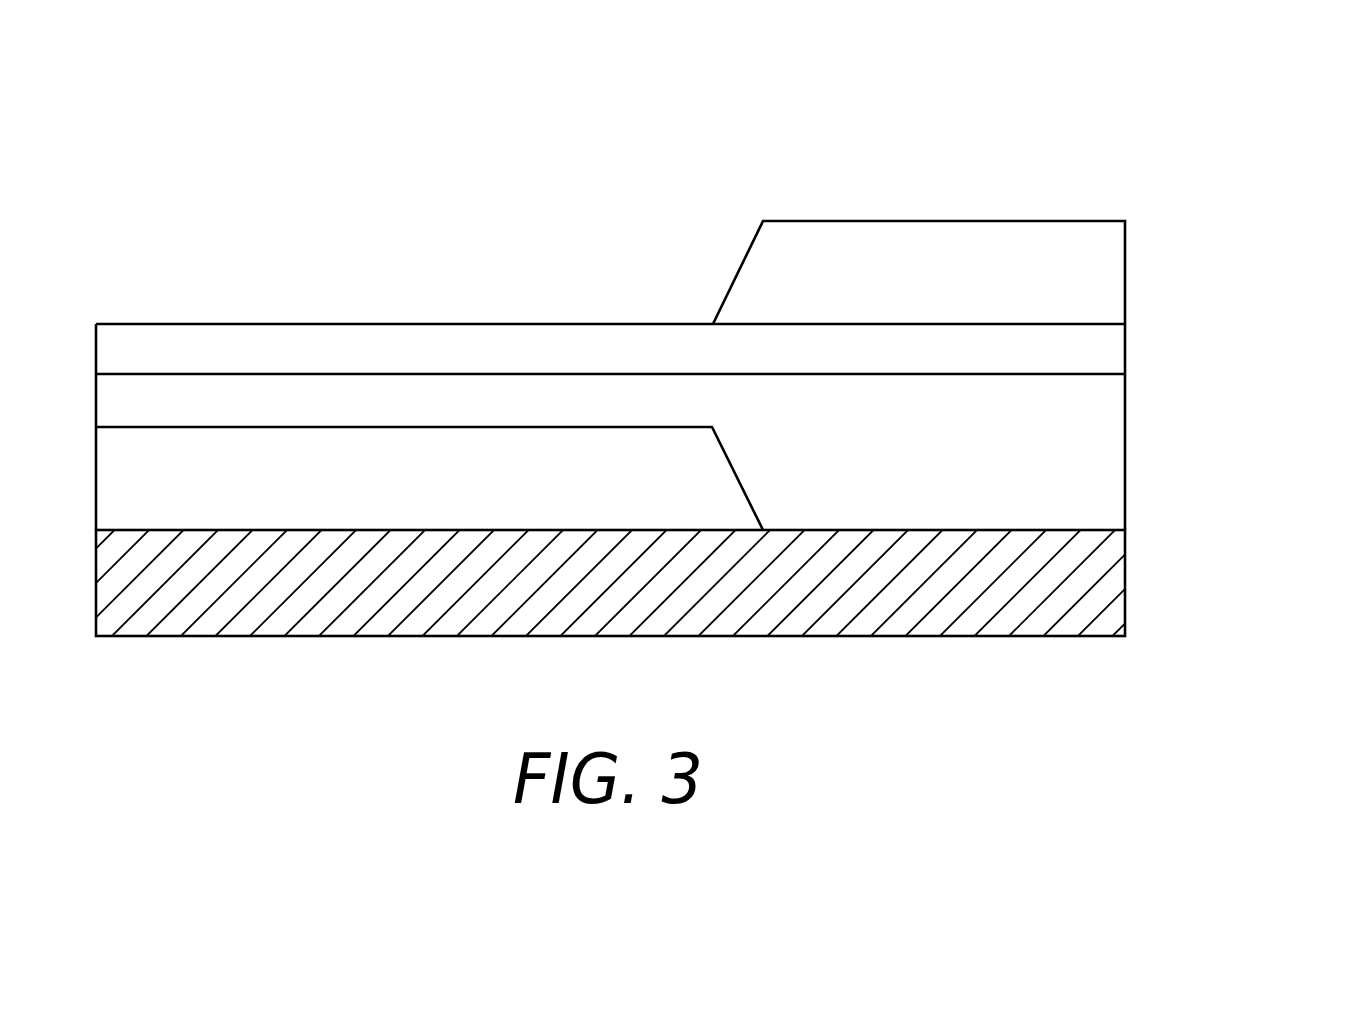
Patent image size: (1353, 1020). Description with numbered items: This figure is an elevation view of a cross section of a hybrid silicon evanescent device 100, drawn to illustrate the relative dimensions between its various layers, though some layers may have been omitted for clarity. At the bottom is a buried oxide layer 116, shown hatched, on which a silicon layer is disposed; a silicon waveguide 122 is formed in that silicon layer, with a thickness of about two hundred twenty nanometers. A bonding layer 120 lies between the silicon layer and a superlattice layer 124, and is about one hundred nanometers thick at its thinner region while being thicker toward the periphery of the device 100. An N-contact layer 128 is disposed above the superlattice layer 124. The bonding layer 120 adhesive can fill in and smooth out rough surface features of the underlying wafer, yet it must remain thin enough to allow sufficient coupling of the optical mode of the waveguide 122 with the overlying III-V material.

The hybrid silicon evanescent device 100 is at (1268, 120).
The buried oxide layer 116 is at (1125, 589).
The bonding layer 120 is at (1125, 452).
The silicon waveguide 122 is at (114, 480).
The superlattice layer 124 is at (1125, 351).
The N-contact layer 128 is at (1125, 273).